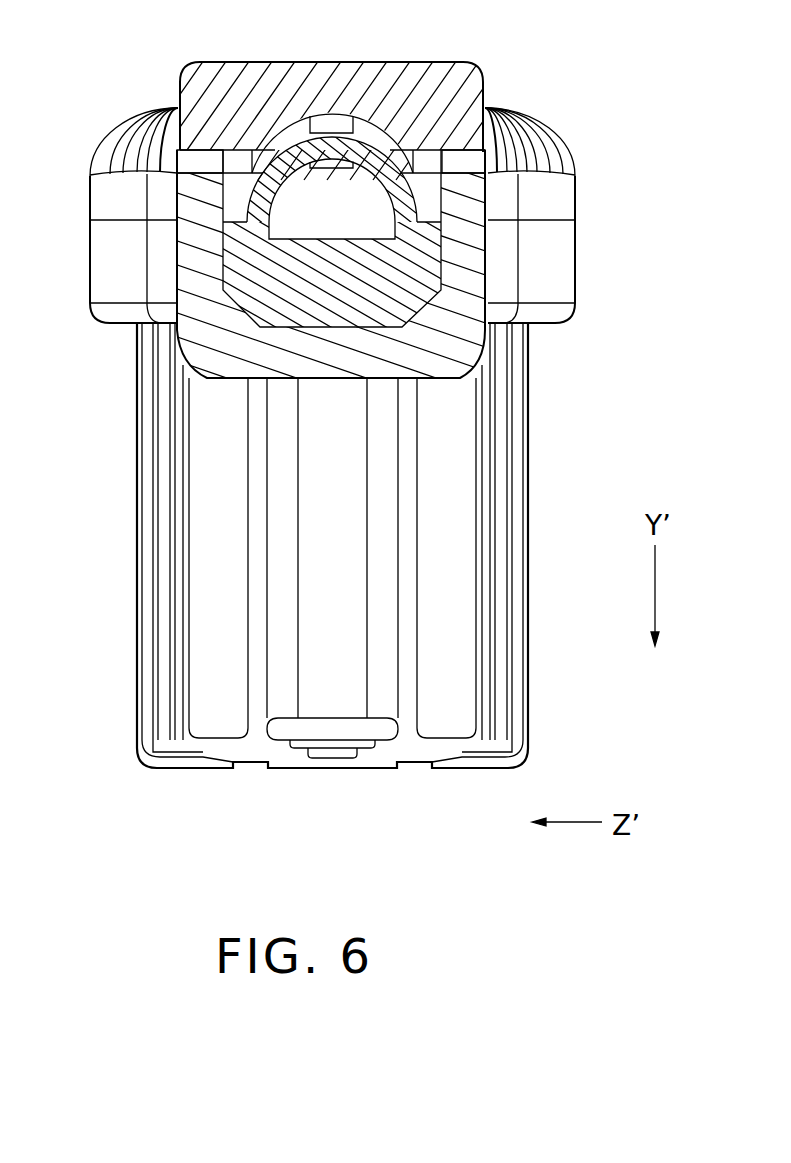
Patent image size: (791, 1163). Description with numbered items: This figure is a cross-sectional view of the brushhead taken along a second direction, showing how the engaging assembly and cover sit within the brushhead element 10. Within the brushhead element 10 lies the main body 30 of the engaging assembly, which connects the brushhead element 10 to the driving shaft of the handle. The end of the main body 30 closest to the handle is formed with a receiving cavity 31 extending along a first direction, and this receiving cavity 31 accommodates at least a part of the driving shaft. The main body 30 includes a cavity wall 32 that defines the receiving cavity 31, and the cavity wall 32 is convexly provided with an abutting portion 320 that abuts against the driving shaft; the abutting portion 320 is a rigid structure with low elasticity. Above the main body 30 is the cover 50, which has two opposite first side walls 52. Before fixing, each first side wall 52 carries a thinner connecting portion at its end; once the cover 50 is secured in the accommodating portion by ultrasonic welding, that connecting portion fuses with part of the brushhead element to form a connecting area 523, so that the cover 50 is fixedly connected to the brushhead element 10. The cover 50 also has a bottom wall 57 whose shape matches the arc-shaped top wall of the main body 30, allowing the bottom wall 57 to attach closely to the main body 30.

The brushhead element 10 is at (555, 190).
The main body 30 is at (402, 285).
The receiving cavity 31 is at (380, 215).
The cavity wall 32 is at (390, 183).
The abutting portion 320 is at (337, 166).
The cover 50 is at (326, 75).
The first side wall 52 is at (180, 108).
The connecting area 523 is at (203, 164).
The bottom wall 57 is at (300, 113).